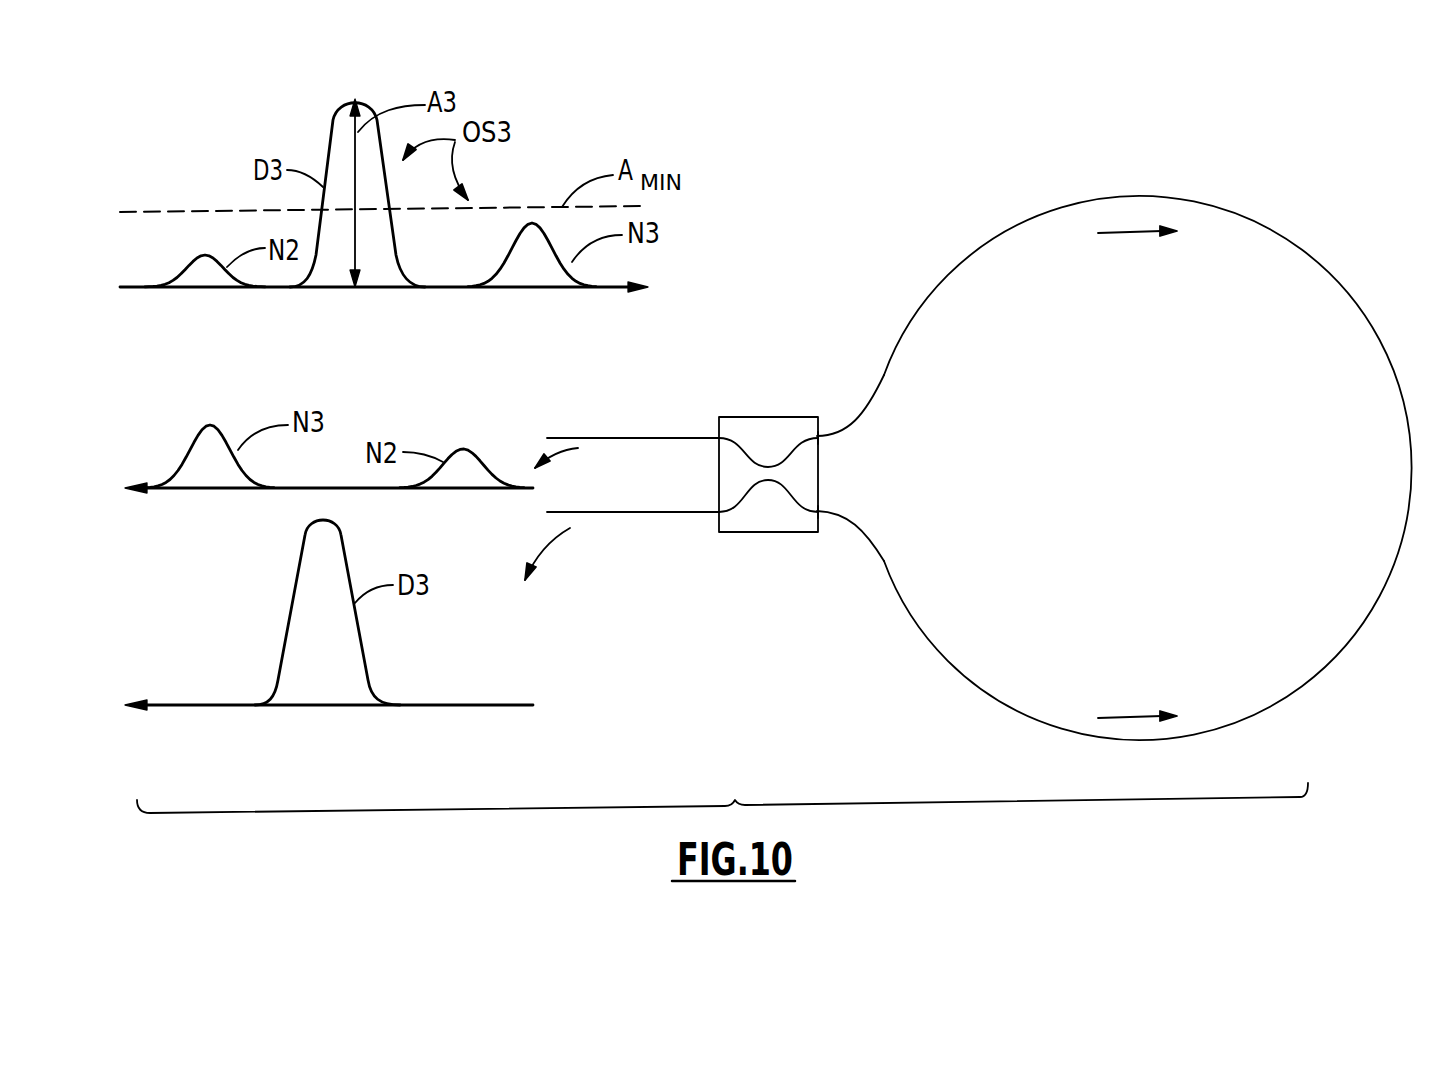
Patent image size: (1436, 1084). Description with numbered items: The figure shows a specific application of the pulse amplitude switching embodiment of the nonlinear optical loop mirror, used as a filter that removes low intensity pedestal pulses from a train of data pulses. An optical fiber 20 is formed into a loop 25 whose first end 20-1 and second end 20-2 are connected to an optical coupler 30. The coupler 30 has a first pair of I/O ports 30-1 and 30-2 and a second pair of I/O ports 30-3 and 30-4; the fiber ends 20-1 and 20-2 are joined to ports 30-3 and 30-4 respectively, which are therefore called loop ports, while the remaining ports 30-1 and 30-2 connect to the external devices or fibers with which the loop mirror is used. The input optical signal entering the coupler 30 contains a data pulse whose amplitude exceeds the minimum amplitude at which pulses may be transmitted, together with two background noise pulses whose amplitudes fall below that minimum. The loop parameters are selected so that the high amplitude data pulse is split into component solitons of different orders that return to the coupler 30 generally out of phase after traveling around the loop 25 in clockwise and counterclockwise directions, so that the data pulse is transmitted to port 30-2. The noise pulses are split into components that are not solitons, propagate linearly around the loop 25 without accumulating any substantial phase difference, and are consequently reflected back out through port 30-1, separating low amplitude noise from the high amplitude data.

The optical fiber 20 is at (1287, 235).
The loop 25 is at (1153, 476).
The optical coupler 30 is at (757, 417).
The first I/O port 30-1 is at (719, 438).
The second I/O port 30-2 is at (719, 512).
The third I/O port (loop port) 30-3 is at (835, 380).
The fourth I/O port (loop port) 30-4 is at (818, 512).
The first end of optical fiber 20-1 is at (843, 436).
The second end of optical fiber 20-2 is at (865, 527).